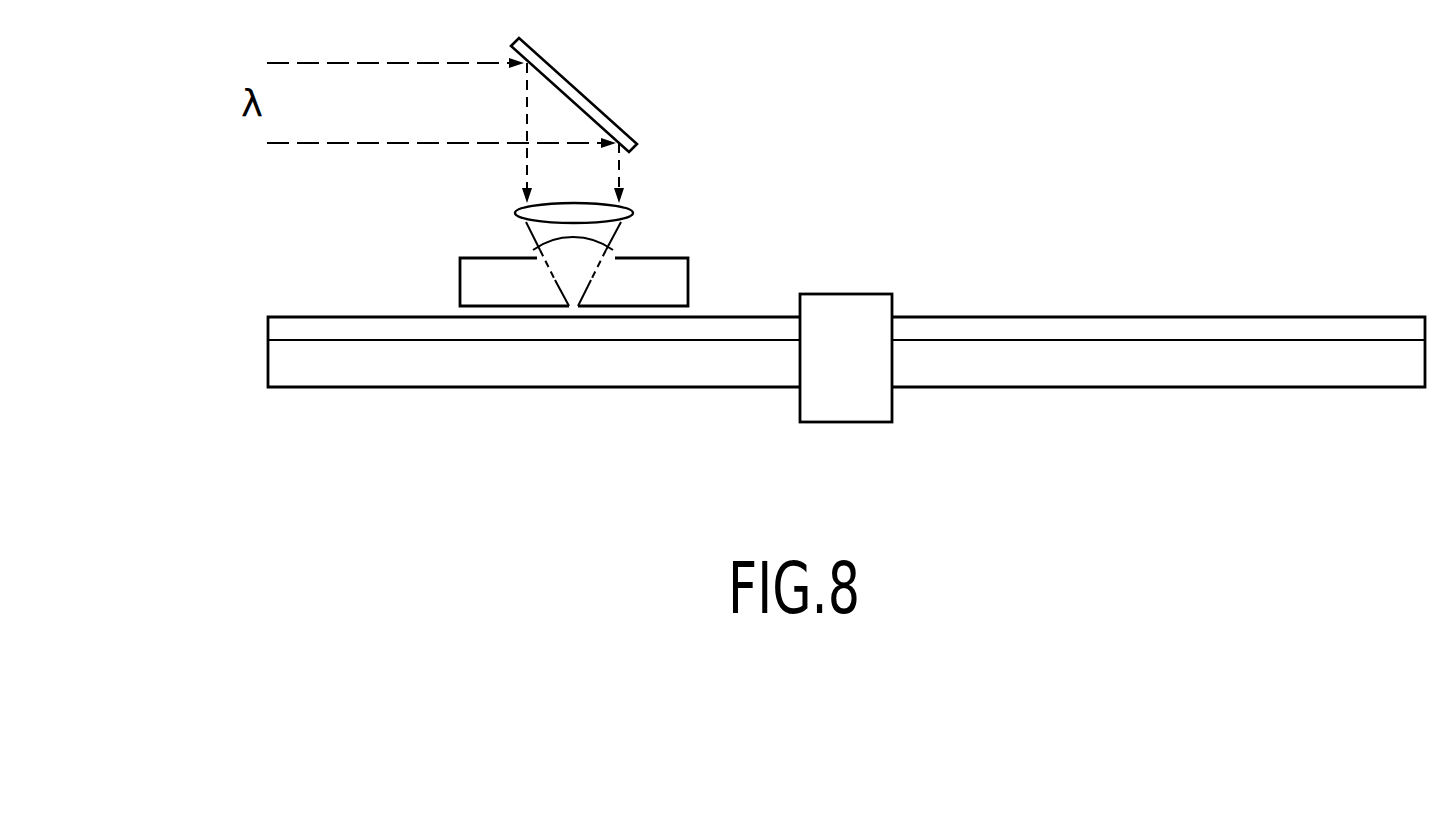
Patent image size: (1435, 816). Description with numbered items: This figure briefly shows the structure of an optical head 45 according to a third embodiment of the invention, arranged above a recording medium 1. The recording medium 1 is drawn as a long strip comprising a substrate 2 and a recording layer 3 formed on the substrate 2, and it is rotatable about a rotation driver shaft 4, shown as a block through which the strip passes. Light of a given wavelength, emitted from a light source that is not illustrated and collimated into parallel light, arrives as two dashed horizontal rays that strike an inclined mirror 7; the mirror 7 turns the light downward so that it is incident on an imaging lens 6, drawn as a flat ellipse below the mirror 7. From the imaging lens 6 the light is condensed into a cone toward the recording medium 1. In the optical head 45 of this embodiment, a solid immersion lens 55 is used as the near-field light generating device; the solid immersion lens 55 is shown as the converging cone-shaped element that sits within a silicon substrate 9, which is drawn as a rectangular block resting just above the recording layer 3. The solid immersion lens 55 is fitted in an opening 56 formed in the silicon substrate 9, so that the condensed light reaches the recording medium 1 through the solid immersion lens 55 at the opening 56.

The recording medium 1 is at (480, 393).
The substrate 2 is at (278, 365).
The recording layer 3 is at (283, 326).
The rotation driver shaft 4 is at (847, 305).
The imaging lens 6 is at (627, 215).
The mirror 7 is at (581, 102).
The silicon substrate 9 is at (690, 293).
The optical head 45 is at (727, 243).
The solid immersion lens 55 is at (537, 251).
The opening 56 is at (597, 287).